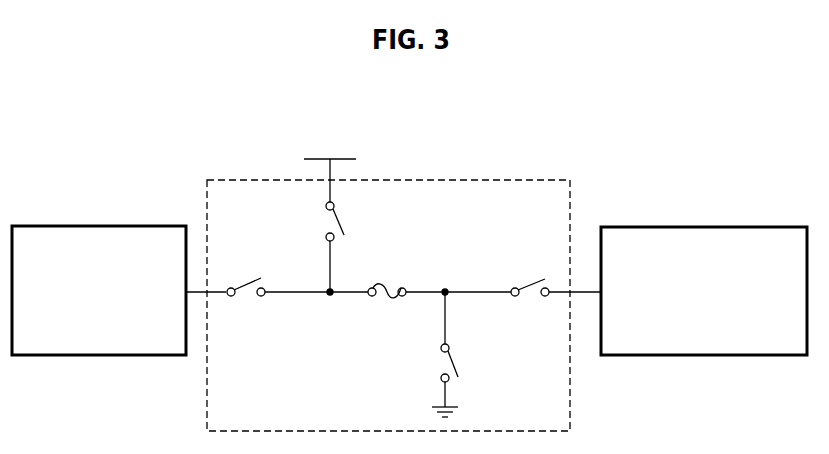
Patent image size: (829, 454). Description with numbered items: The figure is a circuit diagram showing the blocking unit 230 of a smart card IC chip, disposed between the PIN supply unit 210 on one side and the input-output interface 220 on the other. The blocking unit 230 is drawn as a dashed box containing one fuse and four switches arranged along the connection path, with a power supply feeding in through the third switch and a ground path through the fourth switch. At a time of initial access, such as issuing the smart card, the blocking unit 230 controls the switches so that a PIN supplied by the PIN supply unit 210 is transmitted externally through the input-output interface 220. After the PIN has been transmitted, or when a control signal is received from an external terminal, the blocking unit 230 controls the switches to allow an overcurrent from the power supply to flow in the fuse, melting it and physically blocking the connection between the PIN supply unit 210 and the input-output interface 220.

The PIN supply unit 210 is at (97, 226).
The input-output interface 220 is at (701, 227).
The blocking unit 230 is at (428, 179).